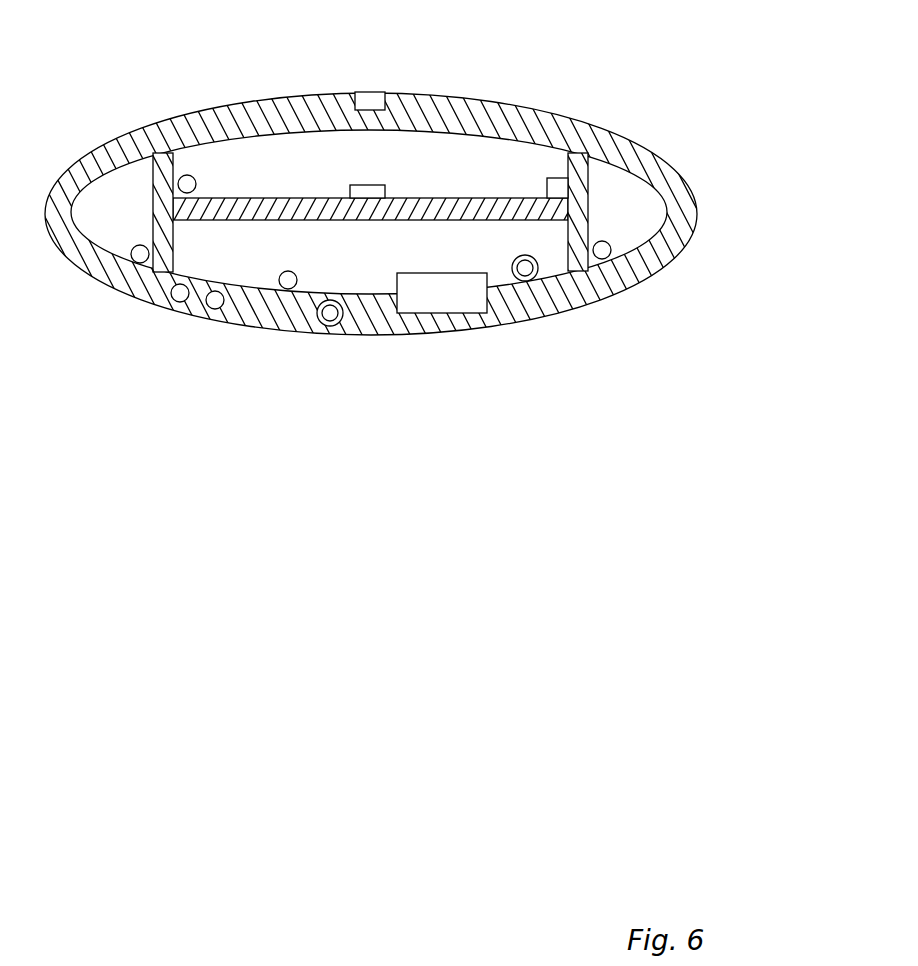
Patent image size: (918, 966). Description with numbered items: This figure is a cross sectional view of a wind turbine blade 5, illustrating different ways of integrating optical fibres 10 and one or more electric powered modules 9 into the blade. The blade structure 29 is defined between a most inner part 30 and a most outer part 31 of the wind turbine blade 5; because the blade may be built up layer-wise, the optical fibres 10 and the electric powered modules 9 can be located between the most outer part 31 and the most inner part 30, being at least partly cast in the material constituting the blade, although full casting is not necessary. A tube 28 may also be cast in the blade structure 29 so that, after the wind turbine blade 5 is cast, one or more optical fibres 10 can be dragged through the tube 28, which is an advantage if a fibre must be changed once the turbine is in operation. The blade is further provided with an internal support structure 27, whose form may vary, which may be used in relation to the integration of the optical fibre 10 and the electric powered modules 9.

The wind turbine blade 5 is at (425, 280).
The electric powered module 9 is at (355, 93).
The optical fibre 10 is at (186, 184).
The internal support structure 27 is at (452, 198).
The tube 28 is at (330, 314).
The blade structure 29 is at (97, 257).
The most inner part 30 is at (646, 240).
The most outer part 31 is at (633, 141).